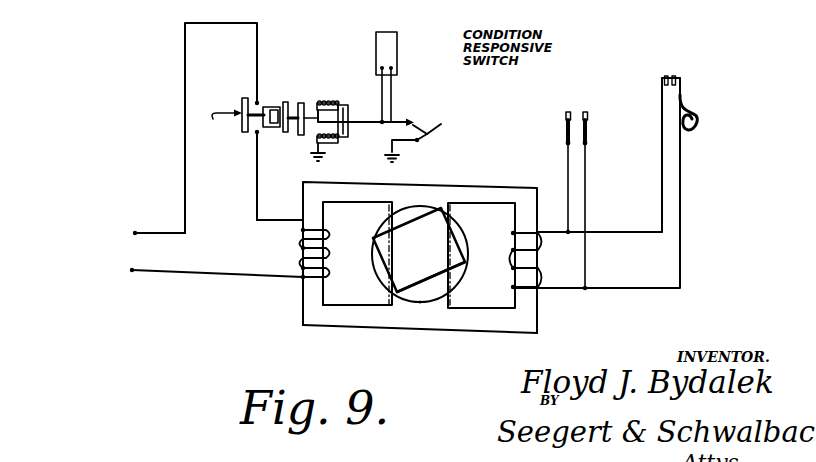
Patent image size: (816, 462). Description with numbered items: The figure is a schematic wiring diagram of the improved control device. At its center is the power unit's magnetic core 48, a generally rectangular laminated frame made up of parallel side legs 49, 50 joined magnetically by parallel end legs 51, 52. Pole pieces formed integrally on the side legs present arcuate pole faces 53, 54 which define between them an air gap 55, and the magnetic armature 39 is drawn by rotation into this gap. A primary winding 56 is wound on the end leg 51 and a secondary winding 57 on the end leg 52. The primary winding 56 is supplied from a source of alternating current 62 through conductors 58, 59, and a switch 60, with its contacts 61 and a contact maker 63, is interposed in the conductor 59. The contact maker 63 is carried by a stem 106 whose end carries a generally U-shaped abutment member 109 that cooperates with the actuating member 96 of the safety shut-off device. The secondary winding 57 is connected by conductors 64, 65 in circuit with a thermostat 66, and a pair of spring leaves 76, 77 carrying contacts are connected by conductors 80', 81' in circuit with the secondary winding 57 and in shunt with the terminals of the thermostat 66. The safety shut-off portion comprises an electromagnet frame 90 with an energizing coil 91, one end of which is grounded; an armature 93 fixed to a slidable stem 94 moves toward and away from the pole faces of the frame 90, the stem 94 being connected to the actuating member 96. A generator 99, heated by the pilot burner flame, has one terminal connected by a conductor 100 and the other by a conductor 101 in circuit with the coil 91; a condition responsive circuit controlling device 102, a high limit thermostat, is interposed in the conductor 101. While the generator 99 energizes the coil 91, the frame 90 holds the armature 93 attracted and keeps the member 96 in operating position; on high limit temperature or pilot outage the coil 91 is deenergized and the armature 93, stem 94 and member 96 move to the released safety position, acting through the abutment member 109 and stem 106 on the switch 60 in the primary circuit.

The magnetic armature 39 is at (464, 253).
The magnetic core 48 is at (491, 183).
The side leg 49 is at (386, 203).
The side leg 50 is at (377, 320).
The end leg 51 is at (308, 303).
The end leg 52 is at (521, 297).
The arcuate pole face 53 is at (429, 206).
The arcuate pole face 54 is at (420, 304).
The air gap 55 is at (432, 288).
The primary winding 56 is at (304, 259).
The secondary winding 57 is at (538, 273).
The conductor 58 is at (236, 279).
The conductor 59 is at (259, 222).
The switch 60 is at (223, 125).
The contacts 61 is at (259, 100).
The source of alternating current 62 is at (140, 250).
The contact maker 63 is at (243, 98).
The conductor 64 is at (654, 234).
The conductor 65 is at (636, 289).
The thermostat 66 is at (698, 124).
The spring leaf 76 is at (566, 135).
The spring leaf 77 is at (588, 134).
The conductor 80' is at (606, 214).
The conductor 81' is at (553, 186).
The electromagnet frame 90 is at (345, 104).
The energizing coil 91 is at (326, 146).
The armature 93 is at (302, 103).
The slidable stem 94 is at (297, 93).
The actuating member 96 is at (280, 129).
The generator 99 is at (449, 119).
The conductor 100 is at (418, 142).
The conductor 101 is at (392, 87).
The condition responsive circuit controlling device 102 is at (450, 50).
The stem 106 is at (256, 100).
The U-shaped abutment member 109 is at (270, 131).